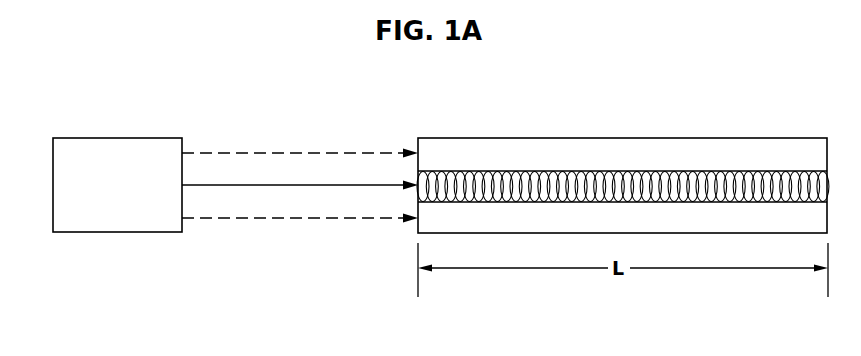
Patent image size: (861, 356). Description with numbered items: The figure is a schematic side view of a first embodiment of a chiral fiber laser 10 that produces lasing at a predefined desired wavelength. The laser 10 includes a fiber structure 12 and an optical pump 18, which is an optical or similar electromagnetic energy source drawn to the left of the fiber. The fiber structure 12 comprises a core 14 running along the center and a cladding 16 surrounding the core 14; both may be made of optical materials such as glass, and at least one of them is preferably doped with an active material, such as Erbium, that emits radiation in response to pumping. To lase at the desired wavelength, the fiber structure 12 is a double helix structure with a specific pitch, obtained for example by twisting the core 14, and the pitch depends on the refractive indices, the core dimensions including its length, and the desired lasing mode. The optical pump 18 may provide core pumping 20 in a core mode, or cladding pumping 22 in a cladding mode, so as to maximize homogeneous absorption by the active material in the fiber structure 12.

The chiral fiber laser 10 is at (214, 91).
The fiber structure 12 is at (695, 138).
The core 14 is at (573, 172).
The cladding 16 is at (525, 155).
The optical pump 18 is at (117, 233).
The core pumping 20 is at (278, 186).
The cladding pumping 22 is at (342, 150).